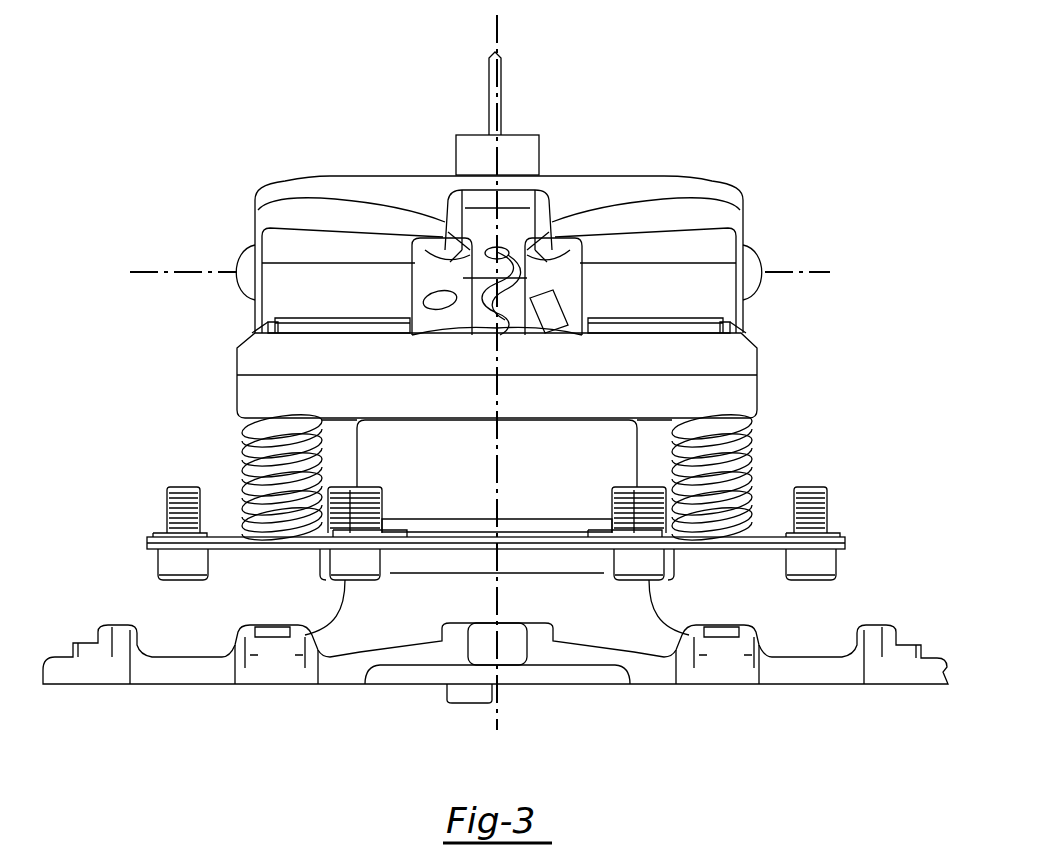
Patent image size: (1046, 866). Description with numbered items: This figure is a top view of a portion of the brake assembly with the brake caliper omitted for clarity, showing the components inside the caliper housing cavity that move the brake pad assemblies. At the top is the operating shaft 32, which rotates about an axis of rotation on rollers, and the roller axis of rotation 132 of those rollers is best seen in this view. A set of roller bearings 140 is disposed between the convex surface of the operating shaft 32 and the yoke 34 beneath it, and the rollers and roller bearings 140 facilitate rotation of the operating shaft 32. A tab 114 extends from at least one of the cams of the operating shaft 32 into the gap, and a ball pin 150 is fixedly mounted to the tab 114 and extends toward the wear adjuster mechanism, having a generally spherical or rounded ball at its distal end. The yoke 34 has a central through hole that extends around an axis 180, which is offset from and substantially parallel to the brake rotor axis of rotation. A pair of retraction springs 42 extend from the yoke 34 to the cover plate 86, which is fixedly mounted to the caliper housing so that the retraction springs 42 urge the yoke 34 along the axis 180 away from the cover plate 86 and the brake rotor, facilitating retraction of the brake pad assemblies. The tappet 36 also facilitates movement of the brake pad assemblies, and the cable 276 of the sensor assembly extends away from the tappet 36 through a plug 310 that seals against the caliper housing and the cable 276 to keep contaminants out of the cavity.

The axis 180 is at (497, 22).
The cable 276 is at (503, 70).
The plug 310 is at (540, 165).
The operating shaft 32 is at (741, 204).
The roller axis of rotation 132 is at (816, 271).
The tab 114 is at (565, 280).
The roller bearings 140 is at (262, 325).
The ball pin 150 is at (545, 312).
The yoke 34 is at (758, 357).
The retraction spring 42 is at (240, 443).
The cover plate 86 is at (845, 540).
The tappet 36 is at (943, 670).